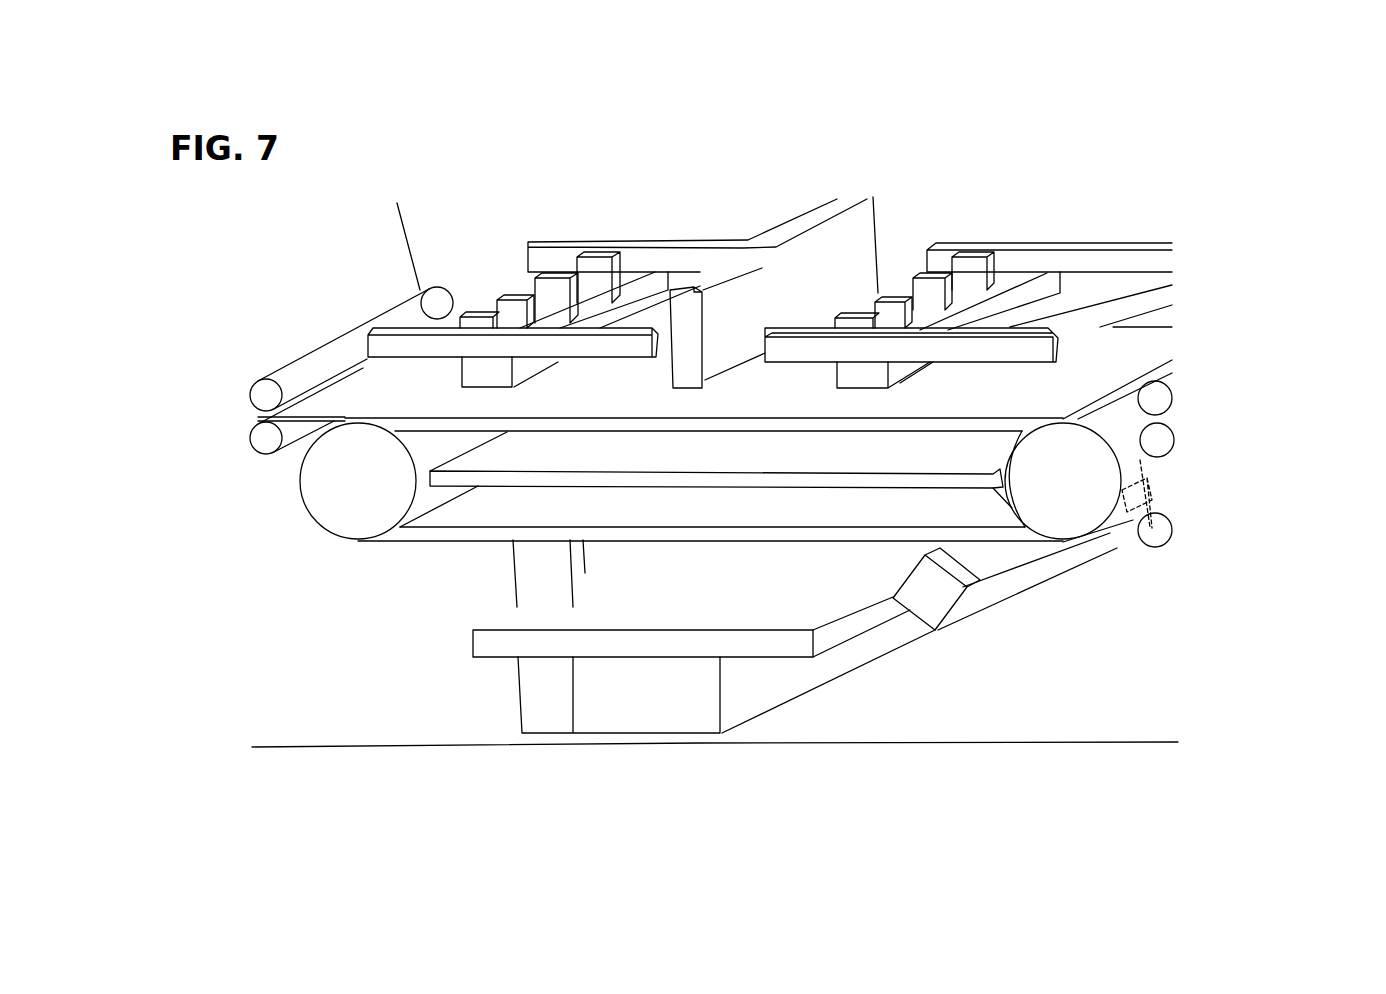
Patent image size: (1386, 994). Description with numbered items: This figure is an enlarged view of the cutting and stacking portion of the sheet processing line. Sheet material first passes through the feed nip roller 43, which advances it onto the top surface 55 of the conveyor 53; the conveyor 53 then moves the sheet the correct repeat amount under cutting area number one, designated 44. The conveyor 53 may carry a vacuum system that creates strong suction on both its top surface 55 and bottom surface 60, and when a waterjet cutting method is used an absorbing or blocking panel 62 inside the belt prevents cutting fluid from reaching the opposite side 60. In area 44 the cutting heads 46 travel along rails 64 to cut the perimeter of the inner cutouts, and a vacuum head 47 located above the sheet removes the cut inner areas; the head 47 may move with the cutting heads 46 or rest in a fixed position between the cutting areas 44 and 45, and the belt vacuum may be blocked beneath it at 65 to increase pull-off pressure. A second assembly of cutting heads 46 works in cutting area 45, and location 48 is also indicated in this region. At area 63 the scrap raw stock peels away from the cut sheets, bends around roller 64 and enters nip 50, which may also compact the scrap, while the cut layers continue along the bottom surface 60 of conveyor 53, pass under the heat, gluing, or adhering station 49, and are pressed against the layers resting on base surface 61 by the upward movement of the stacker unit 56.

The feed nip roller 43 is at (235, 405).
The cutting area number 1 44 is at (635, 198).
The cutting area 45 is at (1076, 216).
The cutting heads 46 is at (890, 296).
The vacuum head 47 is at (797, 210).
The second guide assembly 48 is at (949, 145).
The heat, gluing, or adhering station 49 is at (957, 618).
The nip 50 is at (1195, 438).
The conveyor 53 is at (305, 498).
The top surface 55 is at (422, 413).
The stacker unit 56 is at (627, 690).
The bottom surface 60 is at (648, 541).
The base surface 61 is at (691, 598).
The absorbing panel or blocking panel 62 is at (841, 493).
The area 63 is at (1116, 541).
The rails 64 is at (985, 308).
The vacuum blocking location 65 is at (663, 405).